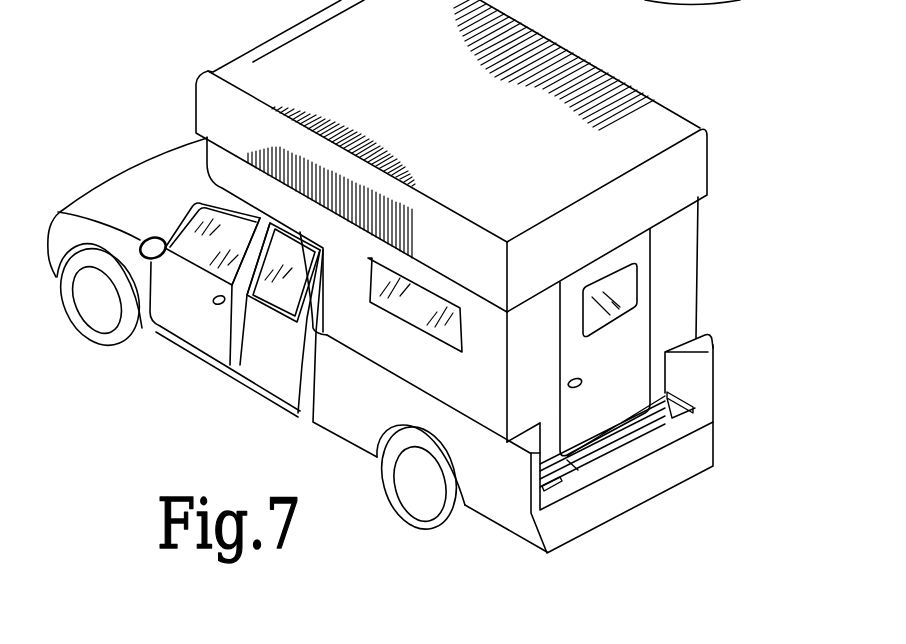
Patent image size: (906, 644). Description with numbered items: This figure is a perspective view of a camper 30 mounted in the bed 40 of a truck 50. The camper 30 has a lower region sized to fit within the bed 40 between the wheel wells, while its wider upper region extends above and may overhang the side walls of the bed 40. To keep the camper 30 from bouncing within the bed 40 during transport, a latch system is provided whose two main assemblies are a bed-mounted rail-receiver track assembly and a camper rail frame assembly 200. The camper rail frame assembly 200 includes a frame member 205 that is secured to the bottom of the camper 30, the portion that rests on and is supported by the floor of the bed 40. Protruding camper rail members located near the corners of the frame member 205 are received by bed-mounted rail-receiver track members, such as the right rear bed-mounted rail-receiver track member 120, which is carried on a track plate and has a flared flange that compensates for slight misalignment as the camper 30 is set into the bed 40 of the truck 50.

The camper 30 is at (660, 127).
The bed 40 is at (695, 367).
The truck 50 is at (207, 332).
The right rear bed-mounted rail-receiver track member 120 is at (670, 404).
The camper rail frame assembly 200 is at (662, 441).
The frame member 205 is at (575, 467).